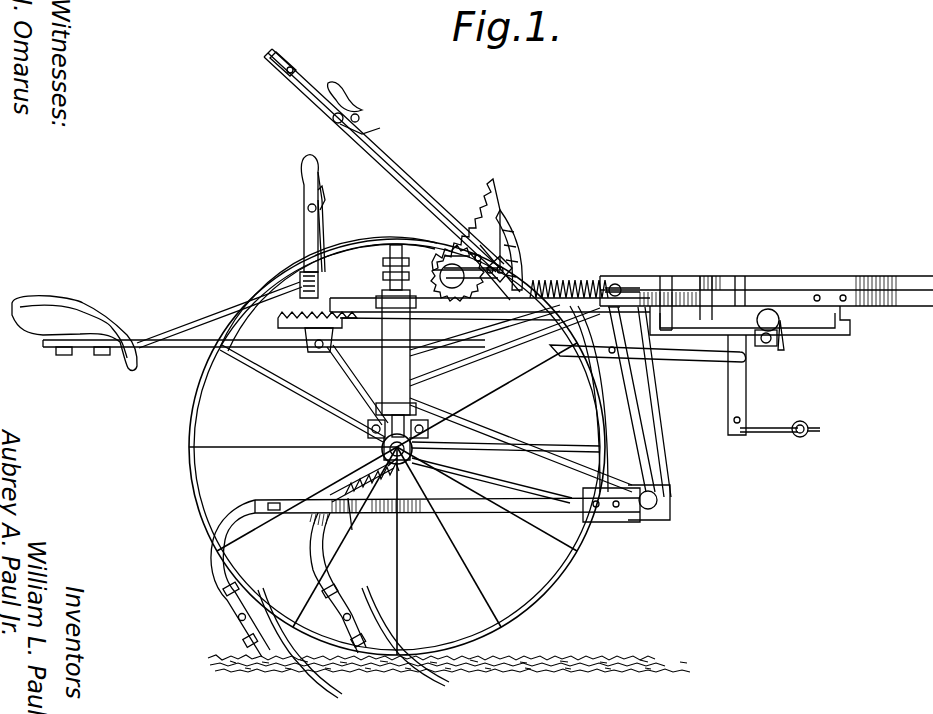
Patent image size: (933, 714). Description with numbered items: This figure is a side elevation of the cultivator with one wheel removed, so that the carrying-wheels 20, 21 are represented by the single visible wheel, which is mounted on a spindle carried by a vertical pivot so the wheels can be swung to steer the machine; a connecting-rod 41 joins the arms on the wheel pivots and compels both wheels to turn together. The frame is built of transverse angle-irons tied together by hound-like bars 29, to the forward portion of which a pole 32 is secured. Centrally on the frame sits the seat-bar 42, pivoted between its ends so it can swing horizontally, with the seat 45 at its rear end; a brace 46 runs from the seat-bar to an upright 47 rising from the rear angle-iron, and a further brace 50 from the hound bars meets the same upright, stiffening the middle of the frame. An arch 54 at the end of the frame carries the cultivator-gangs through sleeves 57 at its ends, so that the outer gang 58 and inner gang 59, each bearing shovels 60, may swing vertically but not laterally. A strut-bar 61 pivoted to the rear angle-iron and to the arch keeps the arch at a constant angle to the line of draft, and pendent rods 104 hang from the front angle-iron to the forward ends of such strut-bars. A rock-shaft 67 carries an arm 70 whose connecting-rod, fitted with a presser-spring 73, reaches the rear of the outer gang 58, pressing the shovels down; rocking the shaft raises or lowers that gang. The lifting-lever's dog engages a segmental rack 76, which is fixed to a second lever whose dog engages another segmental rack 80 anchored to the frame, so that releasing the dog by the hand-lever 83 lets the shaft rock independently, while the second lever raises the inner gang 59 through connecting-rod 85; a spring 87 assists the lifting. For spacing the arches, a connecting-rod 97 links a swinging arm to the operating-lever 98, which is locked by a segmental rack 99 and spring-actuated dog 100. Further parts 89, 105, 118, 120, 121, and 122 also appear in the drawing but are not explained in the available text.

The carrying-wheel 20 is at (190, 442).
The carrying-wheel 21 is at (720, 350).
The bars 29 is at (706, 286).
The pole 32 is at (884, 290).
The connecting-rod 41 is at (345, 350).
The seat-bar 42 is at (196, 350).
The seat 45 is at (78, 327).
The brace 46 is at (212, 320).
The upright 47 is at (465, 364).
The brace 50 is at (398, 255).
The arch 54 is at (650, 452).
The sleeve 57 is at (370, 420).
The outer gang 58 is at (258, 498).
The inner gang 59 is at (288, 578).
The shovel 60 is at (405, 650).
The strut-bar 61 is at (530, 435).
The rock-shaft 67 is at (512, 272).
The arm 70 is at (575, 335).
The presser-spring 73 is at (372, 515).
The segmental rack 76 is at (510, 224).
The segmental rack 80 is at (490, 218).
The hand-lever 83 is at (345, 98).
The connecting-rod 85 is at (470, 448).
The spring 87 is at (590, 285).
The link 89 is at (335, 495).
The connecting-rod 97 is at (330, 290).
The operating-lever 98 is at (305, 222).
The segmental rack 99 is at (310, 330).
The spring-actuated dog 100 is at (263, 283).
The pendent rods 104 is at (660, 398).
The pulley 105 is at (778, 332).
The plate 118 is at (748, 395).
The rod 120 is at (805, 436).
The clip 121 is at (728, 335).
The plate 122 is at (665, 282).